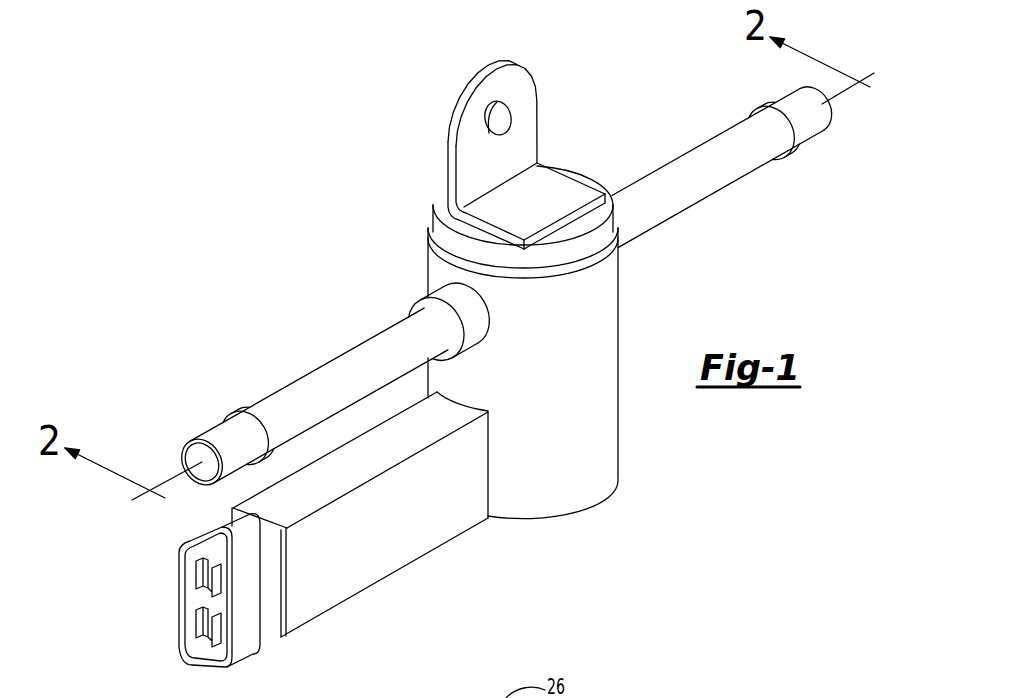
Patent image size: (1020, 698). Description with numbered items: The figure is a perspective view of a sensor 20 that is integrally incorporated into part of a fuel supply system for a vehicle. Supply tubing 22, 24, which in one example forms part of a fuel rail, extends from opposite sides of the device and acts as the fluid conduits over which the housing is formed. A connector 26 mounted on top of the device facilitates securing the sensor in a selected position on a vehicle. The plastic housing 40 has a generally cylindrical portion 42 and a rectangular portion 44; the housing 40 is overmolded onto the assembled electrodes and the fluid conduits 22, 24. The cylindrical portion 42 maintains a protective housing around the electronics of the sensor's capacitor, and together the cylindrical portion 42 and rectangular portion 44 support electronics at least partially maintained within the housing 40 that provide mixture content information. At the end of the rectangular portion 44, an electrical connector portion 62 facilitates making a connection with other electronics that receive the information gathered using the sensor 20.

The sensor 20 is at (340, 212).
The supply tubing 22 is at (305, 388).
The supply tubing 24 is at (722, 152).
The connector 26 is at (527, 118).
The plastic housing 40 is at (604, 304).
The cylindrical portion 42 is at (595, 428).
The rectangular portion 44 is at (422, 525).
The electrical connector portion 62 is at (250, 667).